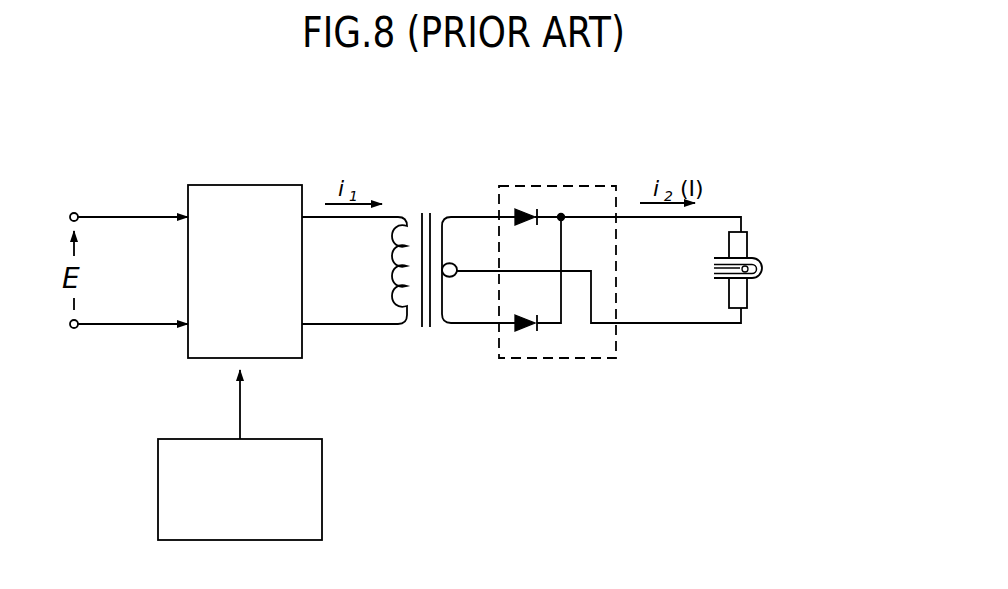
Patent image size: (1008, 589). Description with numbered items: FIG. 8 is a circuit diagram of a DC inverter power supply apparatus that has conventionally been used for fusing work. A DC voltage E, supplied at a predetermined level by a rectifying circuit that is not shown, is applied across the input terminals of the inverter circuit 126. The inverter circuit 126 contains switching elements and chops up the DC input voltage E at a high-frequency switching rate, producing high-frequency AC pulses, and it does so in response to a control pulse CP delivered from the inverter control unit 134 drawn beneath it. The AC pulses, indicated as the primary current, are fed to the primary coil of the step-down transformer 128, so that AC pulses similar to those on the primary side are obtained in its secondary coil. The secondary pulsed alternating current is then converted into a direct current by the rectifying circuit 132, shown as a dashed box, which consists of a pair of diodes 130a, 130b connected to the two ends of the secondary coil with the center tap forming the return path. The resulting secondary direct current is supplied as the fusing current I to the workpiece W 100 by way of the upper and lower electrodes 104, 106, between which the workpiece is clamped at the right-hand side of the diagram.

The inverter circuit 126 is at (244, 185).
The step-down transformer 128 is at (427, 208).
The diode 130a is at (522, 206).
The diode 130b is at (522, 332).
The rectifying circuit 132 is at (596, 186).
The electrode 104 is at (750, 236).
The electrode 106 is at (747, 297).
The workpiece 100 is at (773, 262).
The inverter control unit 134 is at (322, 483).